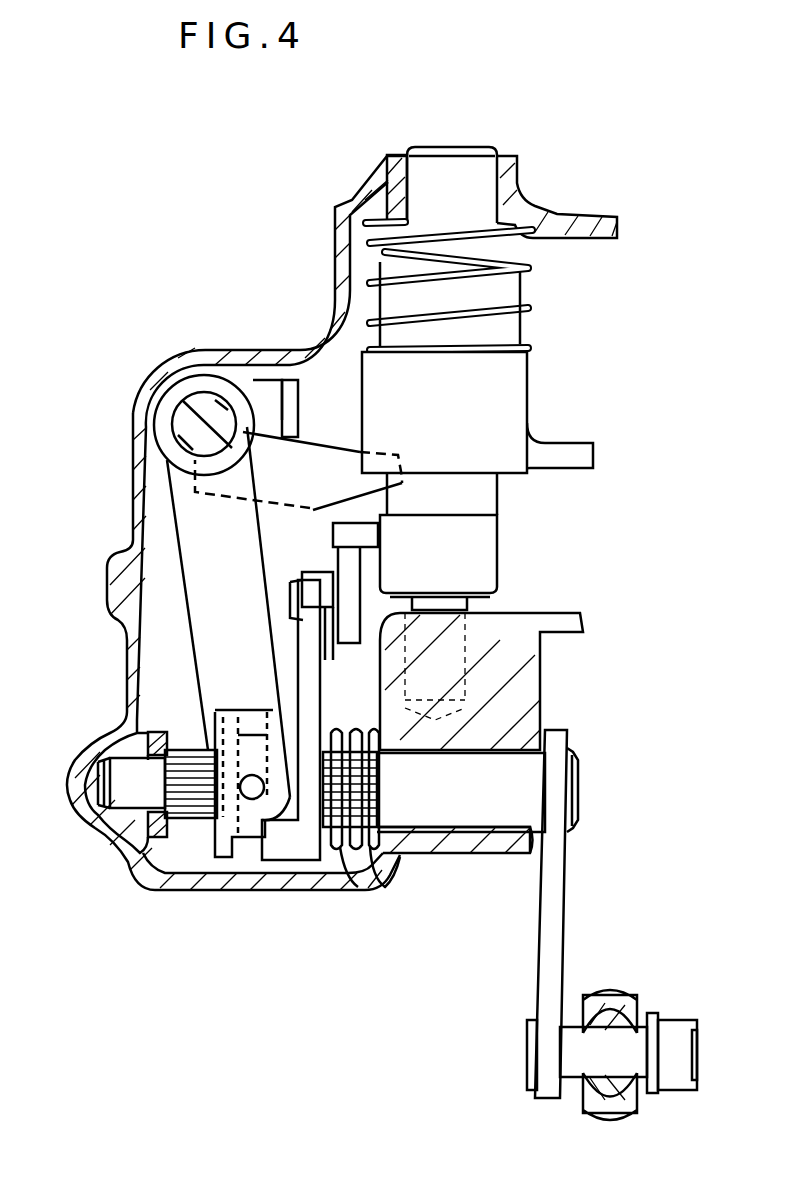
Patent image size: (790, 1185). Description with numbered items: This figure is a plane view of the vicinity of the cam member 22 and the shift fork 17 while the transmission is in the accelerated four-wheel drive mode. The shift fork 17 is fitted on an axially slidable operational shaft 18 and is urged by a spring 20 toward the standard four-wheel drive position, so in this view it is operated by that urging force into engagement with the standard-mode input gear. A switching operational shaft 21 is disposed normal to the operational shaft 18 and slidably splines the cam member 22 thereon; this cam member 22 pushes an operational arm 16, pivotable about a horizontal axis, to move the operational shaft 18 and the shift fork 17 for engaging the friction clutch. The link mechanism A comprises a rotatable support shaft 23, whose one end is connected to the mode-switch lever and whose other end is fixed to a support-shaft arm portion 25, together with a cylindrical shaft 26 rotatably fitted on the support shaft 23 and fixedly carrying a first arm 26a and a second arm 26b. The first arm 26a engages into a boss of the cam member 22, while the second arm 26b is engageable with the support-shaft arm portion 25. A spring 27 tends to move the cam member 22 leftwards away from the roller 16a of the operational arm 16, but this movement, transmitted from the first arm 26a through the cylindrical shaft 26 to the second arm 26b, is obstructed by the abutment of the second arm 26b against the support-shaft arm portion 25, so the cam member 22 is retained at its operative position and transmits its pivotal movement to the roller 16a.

The link mechanism A is at (161, 460).
The operational arm 16 is at (348, 640).
The roller 16a is at (302, 585).
The shift fork 17 is at (567, 457).
The operational shaft 18 is at (470, 606).
The spring 20 is at (532, 307).
The switching operational shaft 21 is at (578, 792).
The cam member 22 is at (283, 850).
The support shaft 23 is at (183, 413).
The support-shaft arm portion 25 is at (334, 445).
The cylindrical shaft 26 is at (208, 375).
The first arm 26a is at (198, 675).
The second arm 26b is at (292, 380).
The spring 27 is at (345, 862).